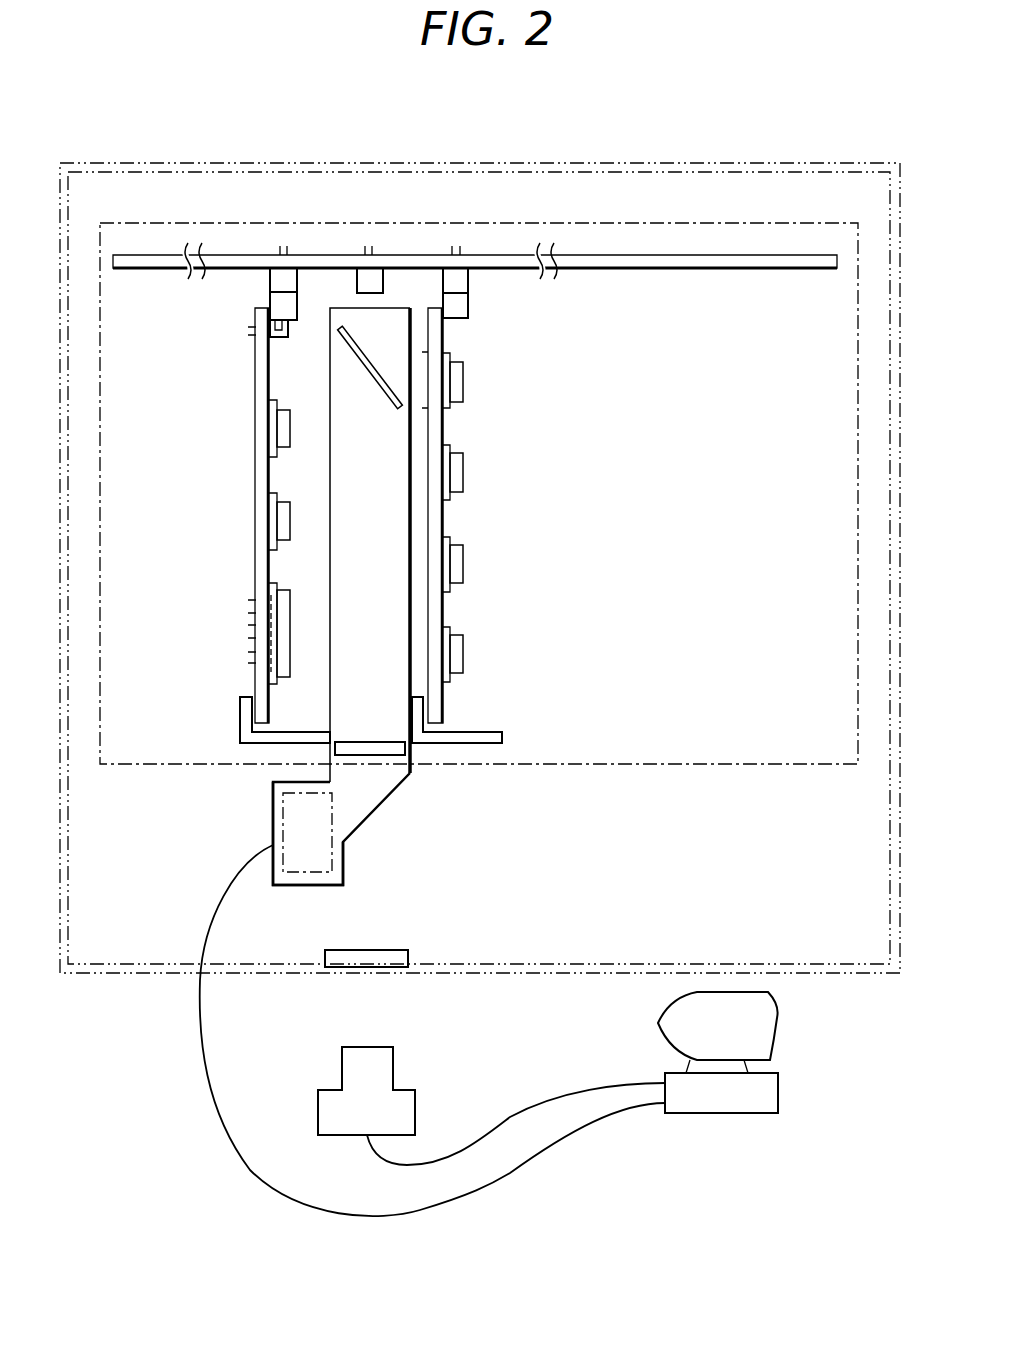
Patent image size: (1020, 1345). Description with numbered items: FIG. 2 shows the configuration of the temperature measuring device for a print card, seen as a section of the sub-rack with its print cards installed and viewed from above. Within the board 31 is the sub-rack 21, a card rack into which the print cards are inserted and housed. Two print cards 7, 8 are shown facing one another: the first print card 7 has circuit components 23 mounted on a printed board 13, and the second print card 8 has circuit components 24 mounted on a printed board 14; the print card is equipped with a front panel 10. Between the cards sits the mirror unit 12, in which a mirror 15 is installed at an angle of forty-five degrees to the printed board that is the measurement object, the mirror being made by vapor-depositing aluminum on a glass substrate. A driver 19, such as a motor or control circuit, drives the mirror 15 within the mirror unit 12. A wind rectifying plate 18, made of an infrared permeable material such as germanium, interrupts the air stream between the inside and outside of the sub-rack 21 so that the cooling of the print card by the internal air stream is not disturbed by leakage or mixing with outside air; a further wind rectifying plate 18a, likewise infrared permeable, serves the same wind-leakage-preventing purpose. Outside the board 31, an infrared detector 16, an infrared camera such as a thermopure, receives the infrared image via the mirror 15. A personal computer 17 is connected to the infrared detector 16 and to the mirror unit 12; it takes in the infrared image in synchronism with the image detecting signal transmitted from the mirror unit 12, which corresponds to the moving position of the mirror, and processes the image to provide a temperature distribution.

The board 31 is at (748, 163).
The sub-rack 21 is at (655, 222).
The mirror 15 is at (378, 366).
The print card 7 is at (245, 400).
The circuit components 23 is at (277, 595).
The printed board 13 is at (255, 680).
The front panel 10 is at (248, 745).
The print card 8 is at (448, 607).
The circuit components 24 is at (463, 382).
The printed board 14 is at (437, 703).
The wind rectifying plate 18 is at (383, 750).
The mirror unit 12 is at (296, 886).
The driver 19 is at (325, 858).
The wind rectifying plate 18a is at (395, 950).
The infrared detector 16 is at (395, 1063).
The personal computer 17 is at (707, 1104).